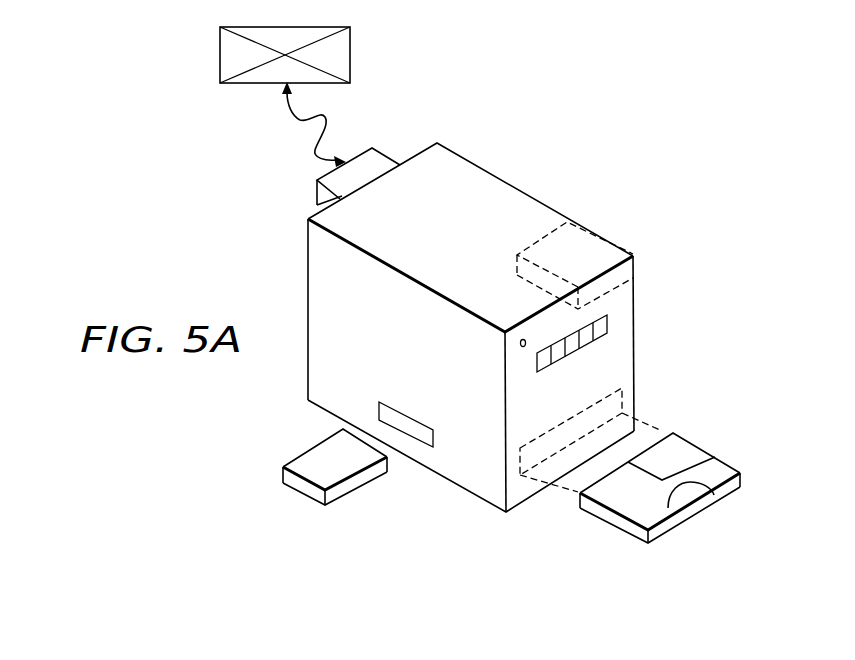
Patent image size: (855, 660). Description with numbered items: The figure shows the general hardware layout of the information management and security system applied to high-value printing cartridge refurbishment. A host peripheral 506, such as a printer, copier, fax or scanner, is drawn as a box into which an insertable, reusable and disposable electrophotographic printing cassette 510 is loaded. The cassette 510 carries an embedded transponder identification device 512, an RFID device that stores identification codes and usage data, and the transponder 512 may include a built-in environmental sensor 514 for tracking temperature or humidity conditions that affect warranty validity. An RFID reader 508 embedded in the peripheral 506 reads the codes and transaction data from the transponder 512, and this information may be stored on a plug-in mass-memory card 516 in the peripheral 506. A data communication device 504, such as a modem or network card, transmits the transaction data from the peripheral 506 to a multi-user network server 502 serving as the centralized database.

The network server 502 is at (220, 57).
The data communication device 504 is at (316, 193).
The peripheral 506 is at (490, 186).
The RFID reader 508 is at (592, 244).
The electrophotographic printing cassette 510 is at (605, 507).
The transponder identification device 512 is at (680, 450).
The built-in sensor 514 is at (710, 515).
The plug-in mass-memory card 516 is at (302, 485).